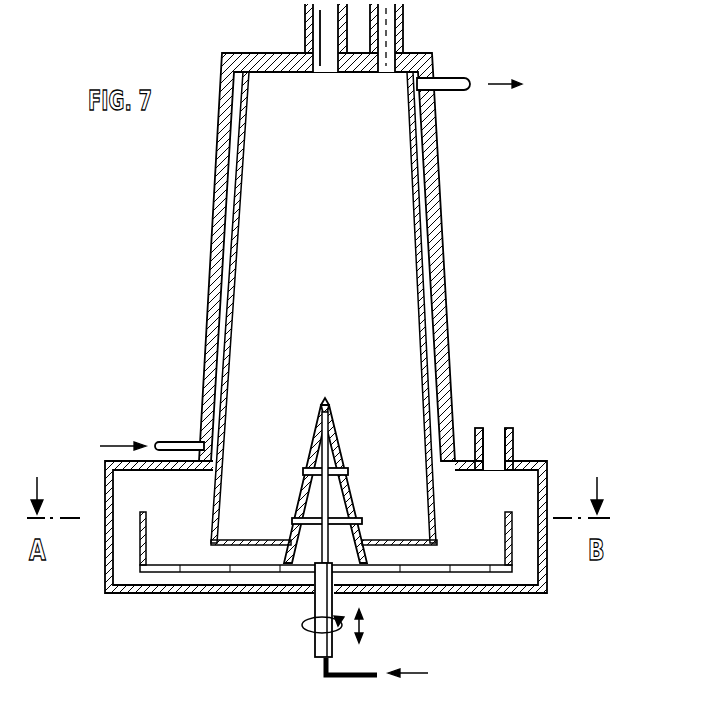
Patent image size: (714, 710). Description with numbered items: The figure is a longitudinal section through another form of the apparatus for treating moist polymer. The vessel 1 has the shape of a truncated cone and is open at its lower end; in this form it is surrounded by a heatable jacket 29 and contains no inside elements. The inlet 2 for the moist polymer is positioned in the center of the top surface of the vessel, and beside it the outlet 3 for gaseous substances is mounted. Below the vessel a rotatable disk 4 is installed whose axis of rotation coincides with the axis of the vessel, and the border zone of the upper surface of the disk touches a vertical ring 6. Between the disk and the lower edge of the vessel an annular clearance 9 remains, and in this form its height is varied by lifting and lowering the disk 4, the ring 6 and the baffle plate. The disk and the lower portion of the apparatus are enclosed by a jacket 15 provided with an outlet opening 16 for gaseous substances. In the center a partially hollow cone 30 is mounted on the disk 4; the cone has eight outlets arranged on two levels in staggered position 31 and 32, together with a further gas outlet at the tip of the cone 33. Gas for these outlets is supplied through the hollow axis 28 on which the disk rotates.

The vessel 1 is at (256, 68).
The inlet 2 is at (305, 25).
The outlet 3 is at (403, 25).
The rotatable disk 4 is at (483, 571).
The vertical ring 6 is at (139, 551).
The annular clearance 9 is at (420, 550).
The jacket 15 is at (105, 490).
The outlet opening 16 is at (513, 447).
The hollow axis 28 is at (322, 641).
The heatable jacket 29 is at (450, 248).
The partially hollow cone 30 is at (283, 536).
The outlets 31 is at (362, 522).
The outlets 32 is at (349, 470).
The gas outlet at the tip of the cone 33 is at (328, 405).